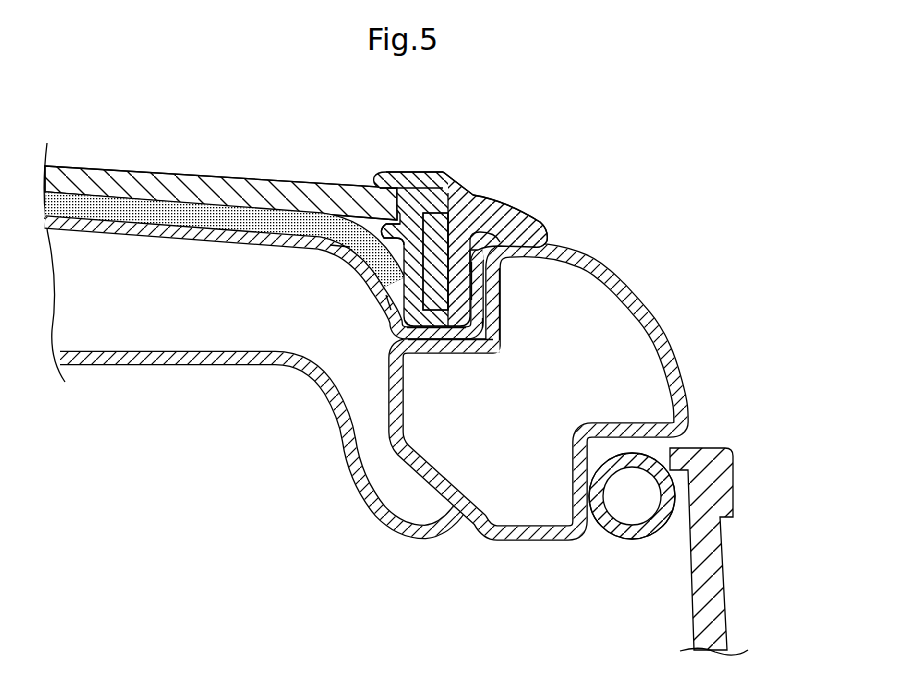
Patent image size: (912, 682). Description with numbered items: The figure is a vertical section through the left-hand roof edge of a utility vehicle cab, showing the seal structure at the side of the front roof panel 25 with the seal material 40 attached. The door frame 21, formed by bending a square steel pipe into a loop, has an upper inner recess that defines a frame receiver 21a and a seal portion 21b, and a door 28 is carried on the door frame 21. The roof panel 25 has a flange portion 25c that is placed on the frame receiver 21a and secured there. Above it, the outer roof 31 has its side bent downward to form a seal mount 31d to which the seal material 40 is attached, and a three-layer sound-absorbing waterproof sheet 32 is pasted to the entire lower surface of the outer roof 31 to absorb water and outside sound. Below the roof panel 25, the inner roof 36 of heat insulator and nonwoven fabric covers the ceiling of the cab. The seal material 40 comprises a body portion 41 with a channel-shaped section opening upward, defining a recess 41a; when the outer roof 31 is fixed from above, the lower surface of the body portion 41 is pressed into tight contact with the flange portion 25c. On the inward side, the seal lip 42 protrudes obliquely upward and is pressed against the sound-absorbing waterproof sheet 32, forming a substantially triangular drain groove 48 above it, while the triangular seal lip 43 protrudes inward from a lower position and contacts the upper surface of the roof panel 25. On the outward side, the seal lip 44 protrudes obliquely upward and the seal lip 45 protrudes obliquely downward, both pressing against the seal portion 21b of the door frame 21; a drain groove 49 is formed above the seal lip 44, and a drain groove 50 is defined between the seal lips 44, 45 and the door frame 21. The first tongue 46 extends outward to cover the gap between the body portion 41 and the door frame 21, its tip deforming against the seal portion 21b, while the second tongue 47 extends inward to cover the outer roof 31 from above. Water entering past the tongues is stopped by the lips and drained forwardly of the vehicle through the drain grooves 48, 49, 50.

The door frame 21 is at (633, 281).
The frame receiver 21a is at (465, 352).
The seal portion 21b is at (500, 315).
The roof panel 25 is at (146, 228).
The flange portion 25c is at (432, 352).
The door 28 is at (724, 584).
The outer roof 31 is at (185, 165).
The seal mount 31d is at (436, 290).
The sound-absorbing waterproof sheet 32 is at (205, 218).
The inner roof 36 is at (158, 365).
The seal material 40 is at (433, 170).
The body portion 41 is at (458, 253).
The recess 41a is at (435, 261).
The seal lip 42 is at (348, 233).
The seal lip 43 is at (390, 300).
The seal lip 44 is at (553, 250).
The seal lip 45 is at (487, 327).
The first tongue 46 is at (546, 234).
The second tongue 47 is at (397, 170).
The drain groove 48 is at (396, 228).
The drain groove 49 is at (492, 224).
The drain groove 50 is at (484, 300).